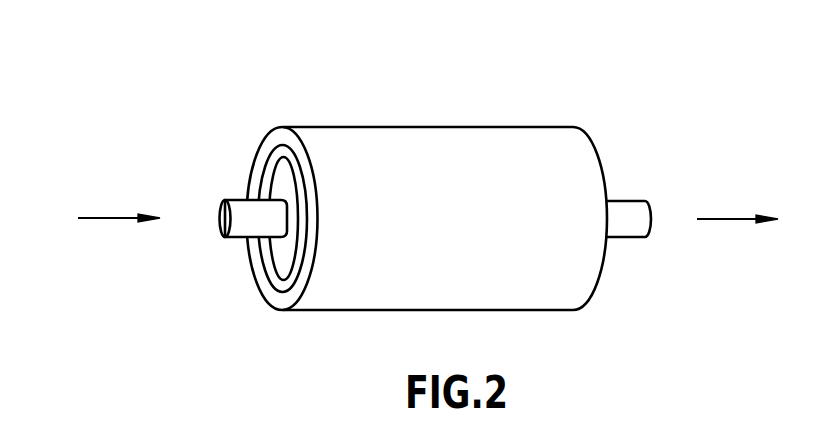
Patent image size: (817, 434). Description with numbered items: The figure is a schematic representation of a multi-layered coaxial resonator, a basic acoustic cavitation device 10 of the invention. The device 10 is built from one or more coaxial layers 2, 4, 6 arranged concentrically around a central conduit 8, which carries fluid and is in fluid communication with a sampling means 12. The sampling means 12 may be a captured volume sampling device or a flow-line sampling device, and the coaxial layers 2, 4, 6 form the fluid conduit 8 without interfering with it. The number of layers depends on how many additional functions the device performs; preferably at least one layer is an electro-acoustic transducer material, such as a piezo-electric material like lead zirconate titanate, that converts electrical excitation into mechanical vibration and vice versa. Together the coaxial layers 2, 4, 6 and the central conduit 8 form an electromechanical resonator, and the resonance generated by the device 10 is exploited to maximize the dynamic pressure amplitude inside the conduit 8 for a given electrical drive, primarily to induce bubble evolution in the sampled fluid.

The device 10 is at (470, 70).
The coaxial layer 2 is at (280, 263).
The coaxial layer 4 is at (280, 284).
The coaxial layer 6 is at (283, 301).
The central conduit 8 is at (227, 237).
The sampling means 12 is at (98, 220).